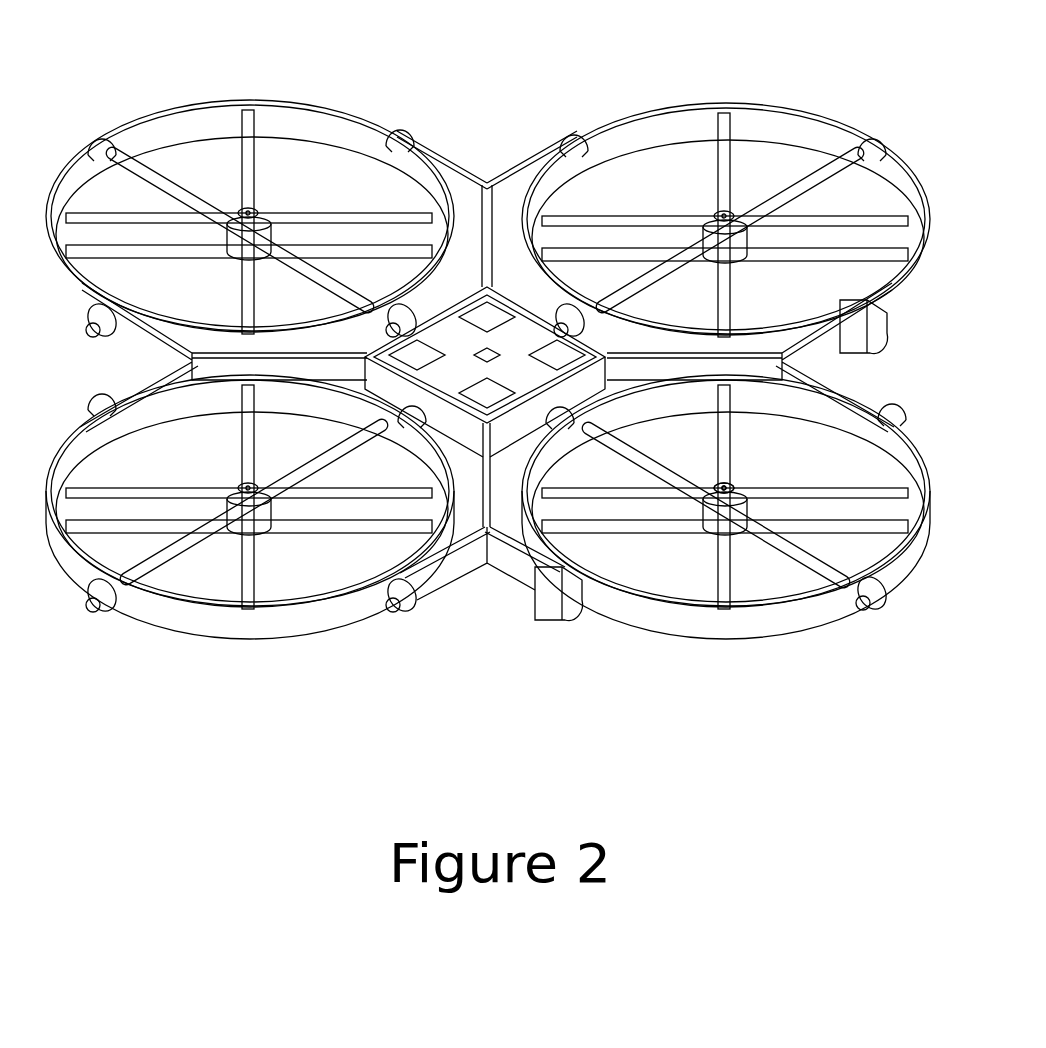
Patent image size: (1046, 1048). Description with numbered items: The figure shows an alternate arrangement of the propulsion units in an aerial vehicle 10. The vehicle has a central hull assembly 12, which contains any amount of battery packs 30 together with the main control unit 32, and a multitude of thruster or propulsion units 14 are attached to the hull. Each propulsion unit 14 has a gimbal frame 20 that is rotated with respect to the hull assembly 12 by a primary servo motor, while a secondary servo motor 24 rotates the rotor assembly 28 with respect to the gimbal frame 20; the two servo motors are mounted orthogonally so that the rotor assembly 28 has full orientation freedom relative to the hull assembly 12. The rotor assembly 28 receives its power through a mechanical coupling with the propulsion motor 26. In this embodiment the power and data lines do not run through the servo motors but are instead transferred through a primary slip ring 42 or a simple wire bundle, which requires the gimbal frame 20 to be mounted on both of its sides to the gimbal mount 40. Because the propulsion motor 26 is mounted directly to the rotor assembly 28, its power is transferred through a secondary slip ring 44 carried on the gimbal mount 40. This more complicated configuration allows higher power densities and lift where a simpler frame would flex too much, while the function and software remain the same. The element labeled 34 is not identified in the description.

The aerial vehicle 10 is at (194, 92).
The hull assembly 12 is at (485, 285).
The propulsion unit 14 is at (126, 622).
The gimbal frame 20 is at (647, 618).
The secondary servo motor 24 is at (567, 412).
The propulsion motor 26 is at (736, 487).
The rotor assembly 28 is at (864, 533).
The battery packs 30 is at (476, 356).
The main control unit 32 is at (104, 397).
The landing gear housing 34 is at (565, 602).
The gimbal mount 40 is at (517, 568).
The primary slip ring 42 is at (903, 415).
The secondary slip ring 44 is at (874, 613).